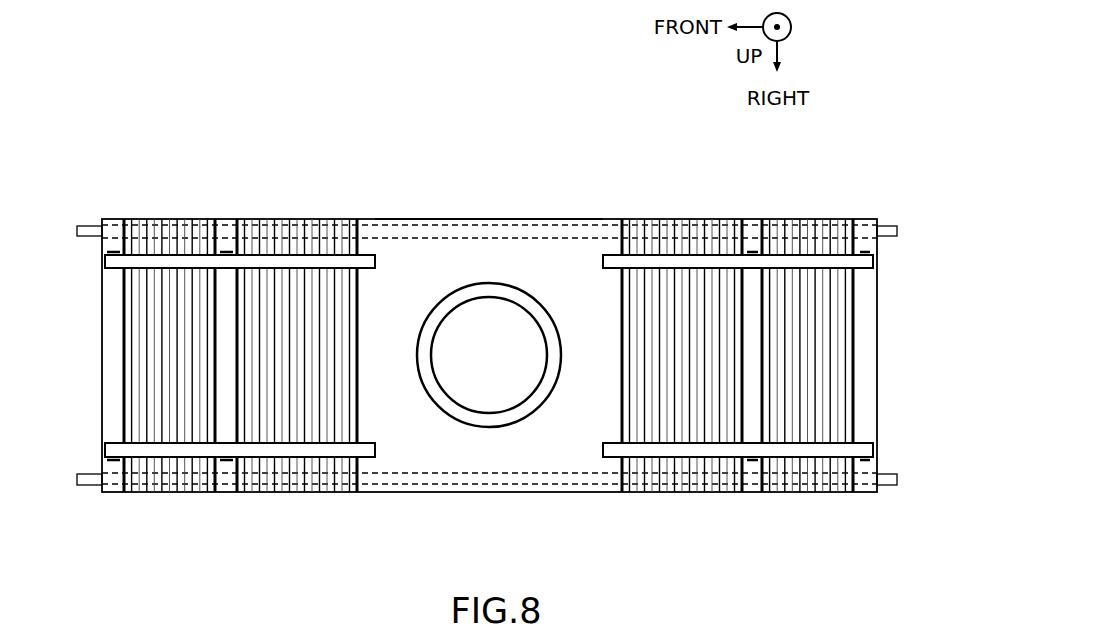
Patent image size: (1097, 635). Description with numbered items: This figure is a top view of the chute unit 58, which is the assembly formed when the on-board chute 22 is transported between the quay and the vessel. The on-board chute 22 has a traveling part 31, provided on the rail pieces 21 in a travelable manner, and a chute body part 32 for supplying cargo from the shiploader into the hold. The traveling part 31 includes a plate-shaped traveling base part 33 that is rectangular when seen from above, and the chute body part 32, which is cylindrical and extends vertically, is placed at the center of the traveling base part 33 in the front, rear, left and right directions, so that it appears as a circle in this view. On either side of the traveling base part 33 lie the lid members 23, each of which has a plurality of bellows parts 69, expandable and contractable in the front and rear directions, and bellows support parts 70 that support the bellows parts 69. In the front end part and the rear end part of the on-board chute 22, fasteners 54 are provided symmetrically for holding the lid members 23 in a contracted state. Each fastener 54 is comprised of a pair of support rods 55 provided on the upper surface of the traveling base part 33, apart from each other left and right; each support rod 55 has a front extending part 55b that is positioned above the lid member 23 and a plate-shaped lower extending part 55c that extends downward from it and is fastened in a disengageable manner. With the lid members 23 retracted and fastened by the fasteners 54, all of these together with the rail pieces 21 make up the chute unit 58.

The rail piece 21 is at (87, 224).
The on-board chute 22 is at (518, 204).
The lid member 23 is at (326, 200).
The traveling part 31 is at (560, 204).
The chute body part 32 is at (423, 401).
The traveling base part 33 is at (447, 218).
The fastener 54 is at (396, 259).
The support rod 55 is at (267, 243).
The front extending part 55b is at (143, 263).
The lower extending part 55c is at (869, 245).
The chute unit 58 is at (400, 196).
The bellows part 69 is at (165, 218).
The bellows support part 70 is at (112, 218).